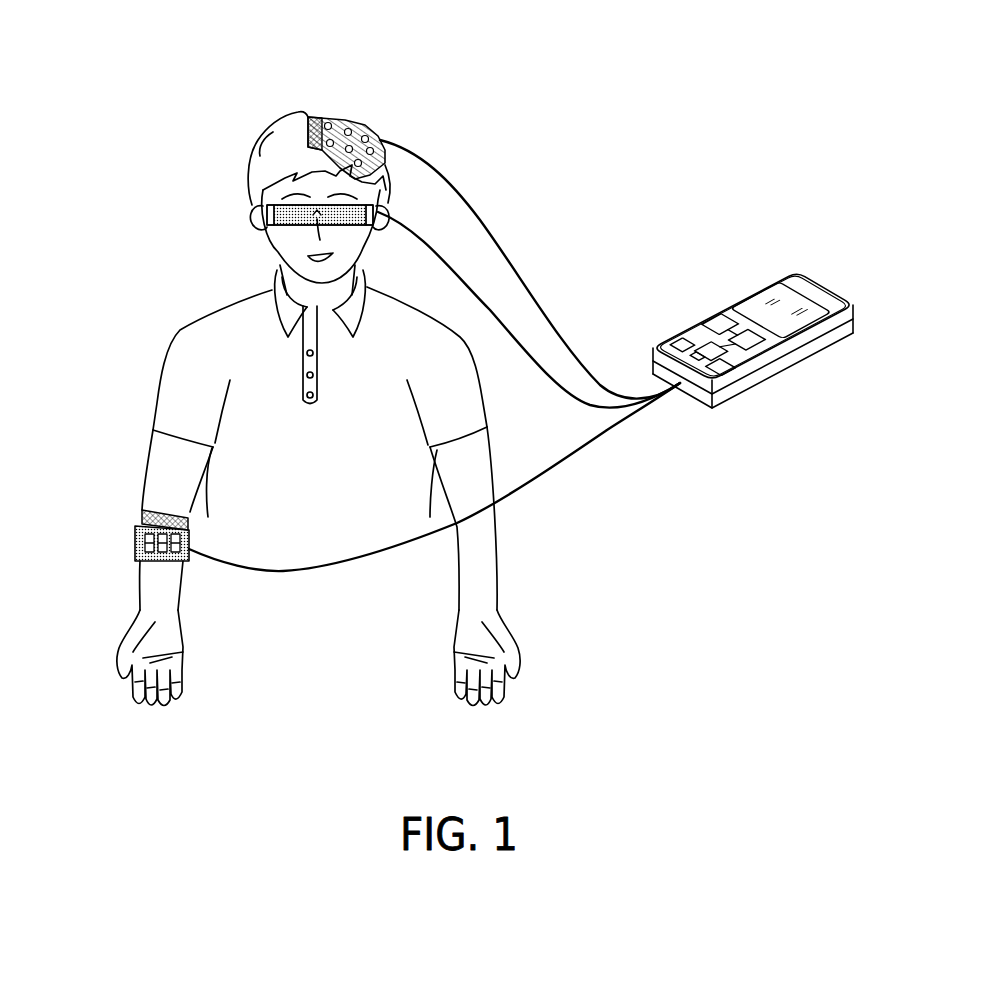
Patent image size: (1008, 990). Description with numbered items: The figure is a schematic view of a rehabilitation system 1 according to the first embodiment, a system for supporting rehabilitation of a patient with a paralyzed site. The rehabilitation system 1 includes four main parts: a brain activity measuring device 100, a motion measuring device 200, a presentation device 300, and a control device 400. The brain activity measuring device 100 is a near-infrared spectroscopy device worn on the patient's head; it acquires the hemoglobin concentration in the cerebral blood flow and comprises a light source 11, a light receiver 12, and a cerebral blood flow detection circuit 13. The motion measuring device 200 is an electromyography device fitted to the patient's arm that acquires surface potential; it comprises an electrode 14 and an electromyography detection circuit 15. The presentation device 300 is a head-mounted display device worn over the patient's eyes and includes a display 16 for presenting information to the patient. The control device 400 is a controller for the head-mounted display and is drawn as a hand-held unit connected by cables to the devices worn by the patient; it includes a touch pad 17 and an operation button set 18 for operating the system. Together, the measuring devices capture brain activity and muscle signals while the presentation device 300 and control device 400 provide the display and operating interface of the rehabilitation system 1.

The rehabilitation system 1 is at (532, 40).
The brain activity measuring device 100 is at (353, 106).
The light source 11 is at (345, 117).
The light receiver 12 is at (333, 113).
The cerebral blood flow detection circuit 13 is at (308, 117).
The presentation device 300 is at (272, 224).
The display 16 is at (292, 225).
The motion measuring device 200 is at (114, 532).
The electrode 14 is at (136, 540).
The electromyography detection circuit 15 is at (142, 513).
The control device 400 is at (764, 306).
The touch pad 17 is at (781, 310).
The operation button set 18 is at (768, 297).